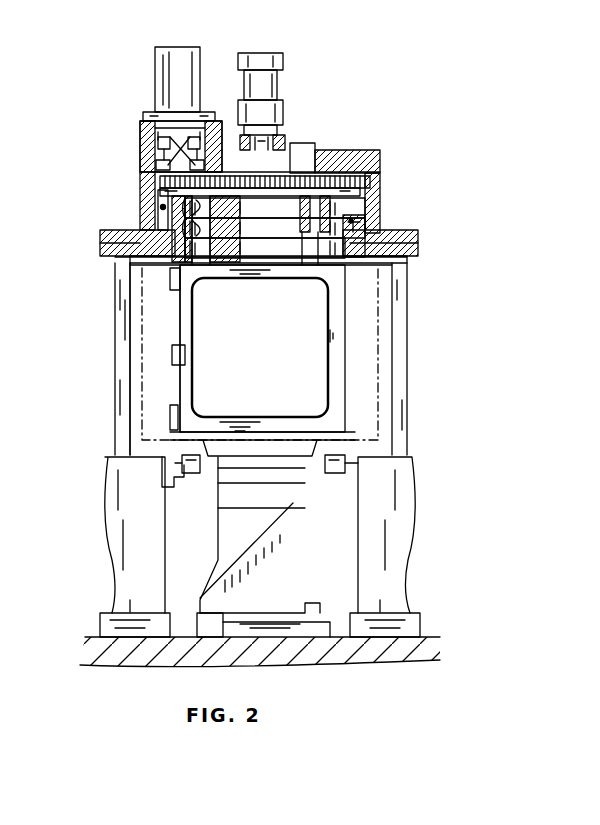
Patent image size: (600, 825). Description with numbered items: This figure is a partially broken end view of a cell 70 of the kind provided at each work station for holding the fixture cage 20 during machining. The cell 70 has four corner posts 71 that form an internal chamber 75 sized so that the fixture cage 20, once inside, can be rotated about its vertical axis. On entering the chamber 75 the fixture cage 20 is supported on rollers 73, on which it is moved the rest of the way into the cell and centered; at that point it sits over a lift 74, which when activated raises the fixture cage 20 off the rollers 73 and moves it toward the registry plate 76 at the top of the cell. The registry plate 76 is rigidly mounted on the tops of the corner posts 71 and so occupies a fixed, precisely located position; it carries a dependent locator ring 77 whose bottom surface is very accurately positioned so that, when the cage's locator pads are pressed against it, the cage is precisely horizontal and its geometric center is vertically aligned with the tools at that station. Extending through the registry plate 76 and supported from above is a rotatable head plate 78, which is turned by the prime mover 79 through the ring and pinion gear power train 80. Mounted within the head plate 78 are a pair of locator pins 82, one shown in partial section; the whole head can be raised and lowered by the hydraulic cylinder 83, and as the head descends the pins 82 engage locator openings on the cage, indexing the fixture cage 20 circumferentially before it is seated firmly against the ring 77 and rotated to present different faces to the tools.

The fixture cage 20 is at (355, 385).
The cell 70 is at (100, 358).
The corner posts 71 is at (407, 330).
The rollers 73 is at (188, 475).
The lift 74 is at (297, 565).
The internal chamber 75 is at (148, 326).
The registry plate 76 is at (416, 248).
The locator ring 77 is at (410, 258).
The head plate 78 is at (362, 232).
The prime mover 79 is at (158, 80).
The ring and pinion gear power train 80 is at (152, 190).
The locator pins 82 is at (205, 268).
The hydraulic cylinder 83 is at (276, 78).